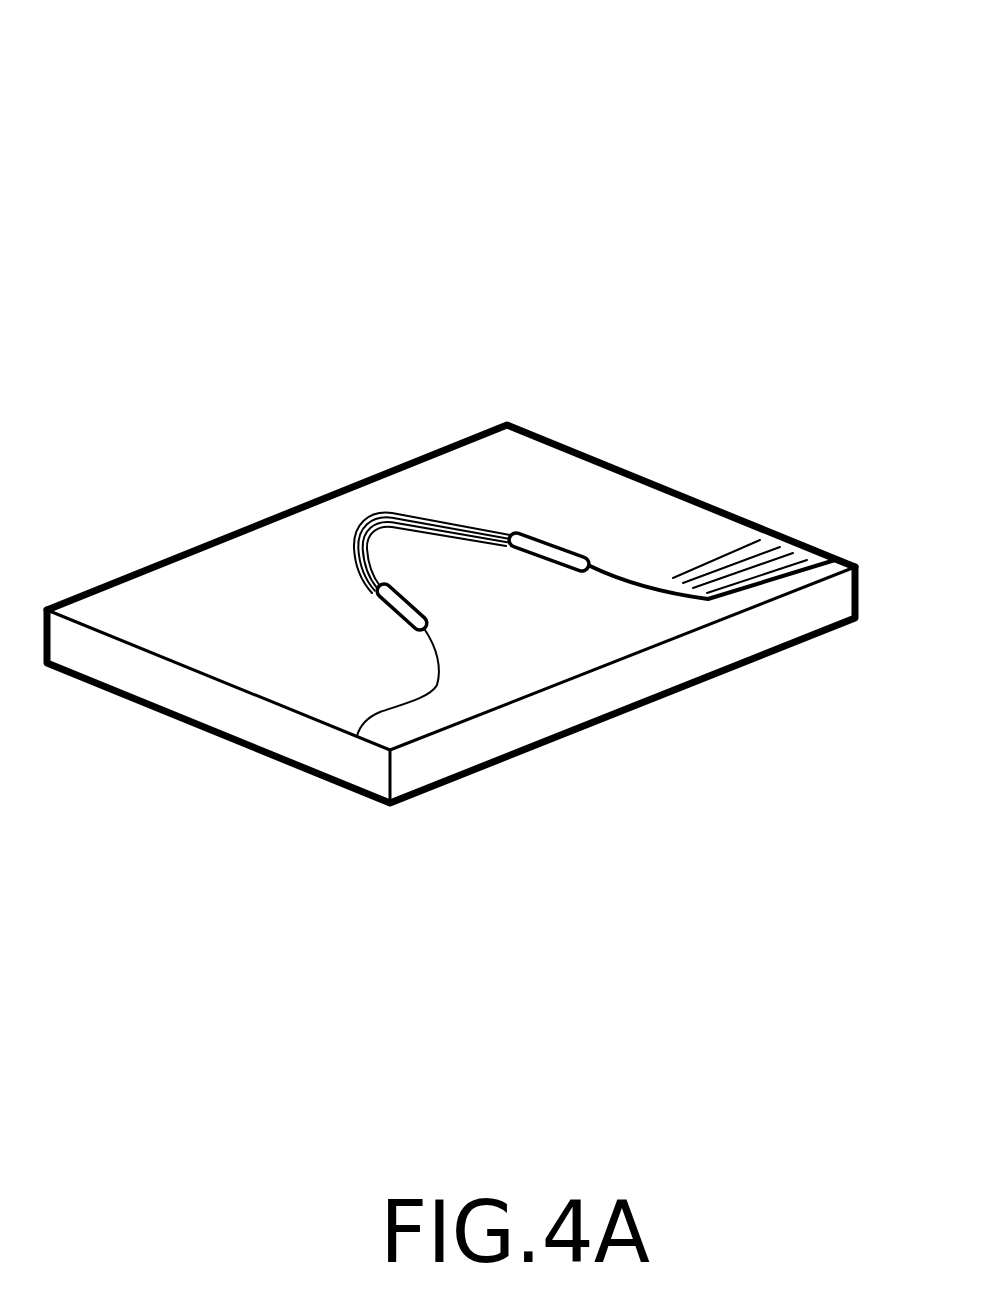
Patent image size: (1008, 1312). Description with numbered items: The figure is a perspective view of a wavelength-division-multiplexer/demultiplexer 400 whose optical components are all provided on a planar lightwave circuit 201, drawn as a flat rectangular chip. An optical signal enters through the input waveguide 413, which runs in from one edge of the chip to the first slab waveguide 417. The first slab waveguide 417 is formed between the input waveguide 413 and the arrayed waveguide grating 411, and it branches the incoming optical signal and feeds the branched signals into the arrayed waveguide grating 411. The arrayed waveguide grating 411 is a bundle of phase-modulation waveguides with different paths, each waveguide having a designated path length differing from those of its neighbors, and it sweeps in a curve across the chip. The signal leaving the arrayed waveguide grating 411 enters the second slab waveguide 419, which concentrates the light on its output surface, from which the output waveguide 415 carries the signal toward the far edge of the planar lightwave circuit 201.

The wavelength-division-multiplexer/demultiplexer 400 is at (492, 56).
The planar lightwave circuit 201 is at (584, 709).
The arrayed waveguide grating 411 is at (380, 527).
The input waveguide 413 is at (357, 736).
The output waveguide 415 is at (737, 587).
The first slab waveguide 417 is at (372, 597).
The second slab waveguide 419 is at (552, 540).